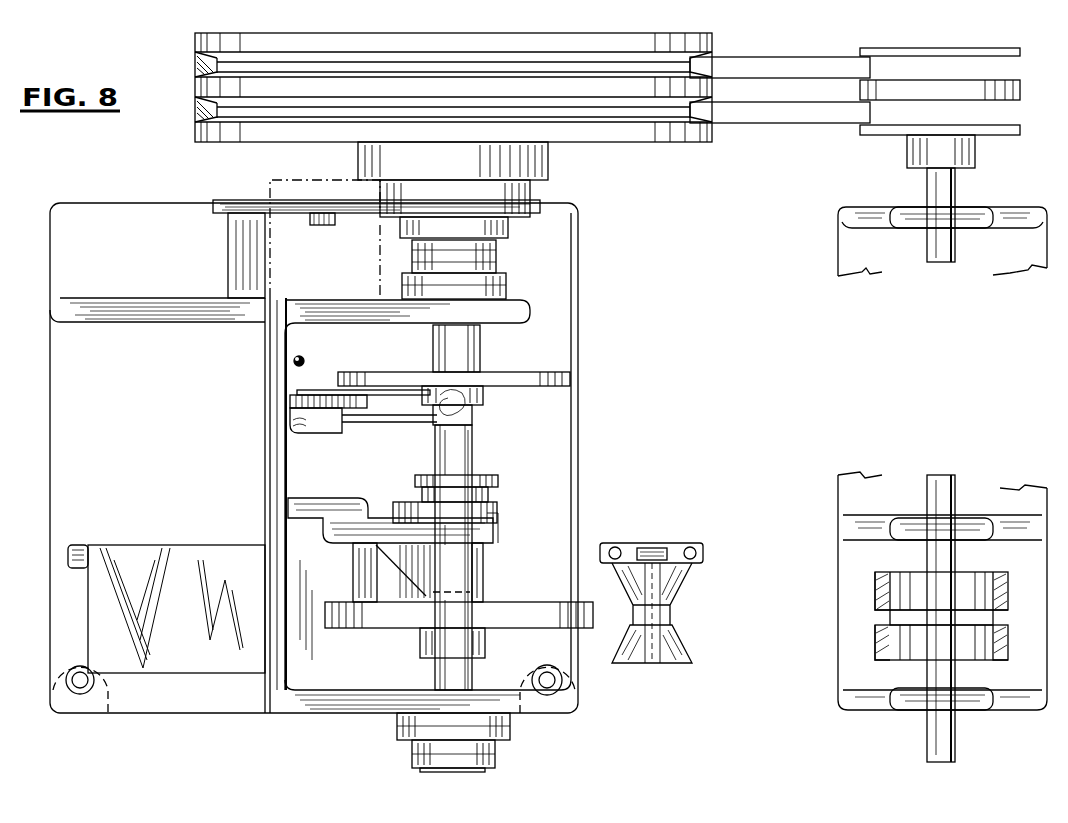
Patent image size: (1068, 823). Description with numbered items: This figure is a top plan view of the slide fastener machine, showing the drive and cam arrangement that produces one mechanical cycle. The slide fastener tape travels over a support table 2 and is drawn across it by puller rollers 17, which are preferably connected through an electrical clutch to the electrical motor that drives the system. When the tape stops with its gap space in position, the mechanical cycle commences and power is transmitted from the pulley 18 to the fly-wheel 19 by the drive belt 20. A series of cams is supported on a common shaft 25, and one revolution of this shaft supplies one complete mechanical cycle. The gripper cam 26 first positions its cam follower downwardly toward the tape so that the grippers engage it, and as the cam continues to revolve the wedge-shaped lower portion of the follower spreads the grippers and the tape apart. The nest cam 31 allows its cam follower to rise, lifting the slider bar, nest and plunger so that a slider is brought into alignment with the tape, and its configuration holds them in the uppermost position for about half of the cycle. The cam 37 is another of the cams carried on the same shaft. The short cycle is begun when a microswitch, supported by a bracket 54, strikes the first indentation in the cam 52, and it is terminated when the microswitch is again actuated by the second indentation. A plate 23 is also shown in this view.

The support table 2 is at (189, 558).
The puller rollers 17 is at (890, 610).
The pulley 18 is at (935, 50).
The fly-wheel 19 is at (483, 44).
The drive belt 20 is at (777, 110).
The top plate 23 is at (292, 182).
The common shaft 25 is at (462, 350).
The gripper cam 26 is at (518, 612).
The nest cam 31 is at (498, 513).
The cam 37 is at (498, 479).
The cam 52 is at (546, 376).
The bracket 54 is at (312, 408).